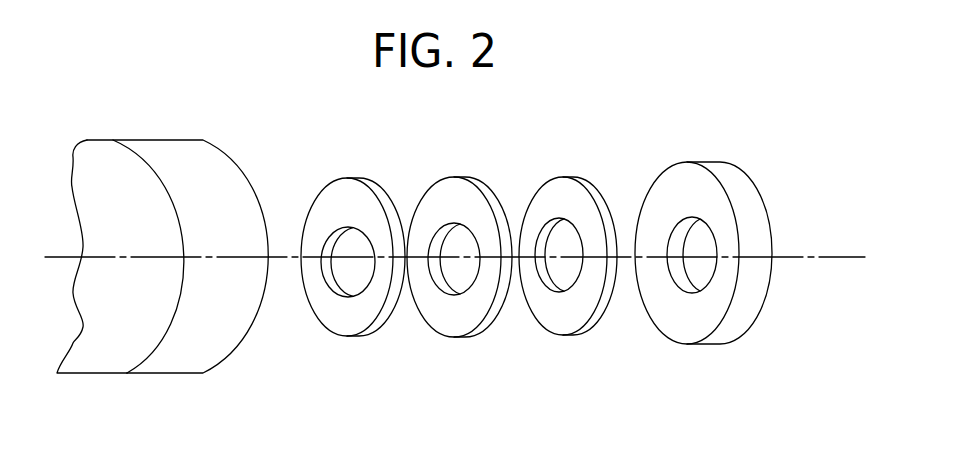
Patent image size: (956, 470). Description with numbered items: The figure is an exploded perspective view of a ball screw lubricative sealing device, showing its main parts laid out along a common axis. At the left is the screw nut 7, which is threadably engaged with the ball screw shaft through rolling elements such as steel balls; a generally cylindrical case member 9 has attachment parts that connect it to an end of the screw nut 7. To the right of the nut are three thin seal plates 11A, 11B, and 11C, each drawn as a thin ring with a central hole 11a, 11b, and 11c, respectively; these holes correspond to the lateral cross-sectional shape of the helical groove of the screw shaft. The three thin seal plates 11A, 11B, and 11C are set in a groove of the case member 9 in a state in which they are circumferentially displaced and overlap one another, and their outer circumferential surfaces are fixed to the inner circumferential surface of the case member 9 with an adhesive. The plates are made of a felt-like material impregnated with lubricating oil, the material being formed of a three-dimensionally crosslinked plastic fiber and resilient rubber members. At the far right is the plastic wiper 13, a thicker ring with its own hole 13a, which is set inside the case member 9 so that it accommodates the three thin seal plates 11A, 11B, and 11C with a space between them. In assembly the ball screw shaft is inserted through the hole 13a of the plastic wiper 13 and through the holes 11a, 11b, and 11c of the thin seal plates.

The screw nut 7 is at (99, 152).
The case member 9 is at (198, 162).
The thin seal plate 11A is at (345, 265).
The thin seal plate 11B is at (466, 265).
The thin seal plate 11C is at (573, 266).
The hole 11a is at (335, 293).
The hole 11b is at (440, 283).
The hole 11c is at (543, 270).
The plastic wiper 13 is at (734, 267).
The hole 13a is at (693, 278).